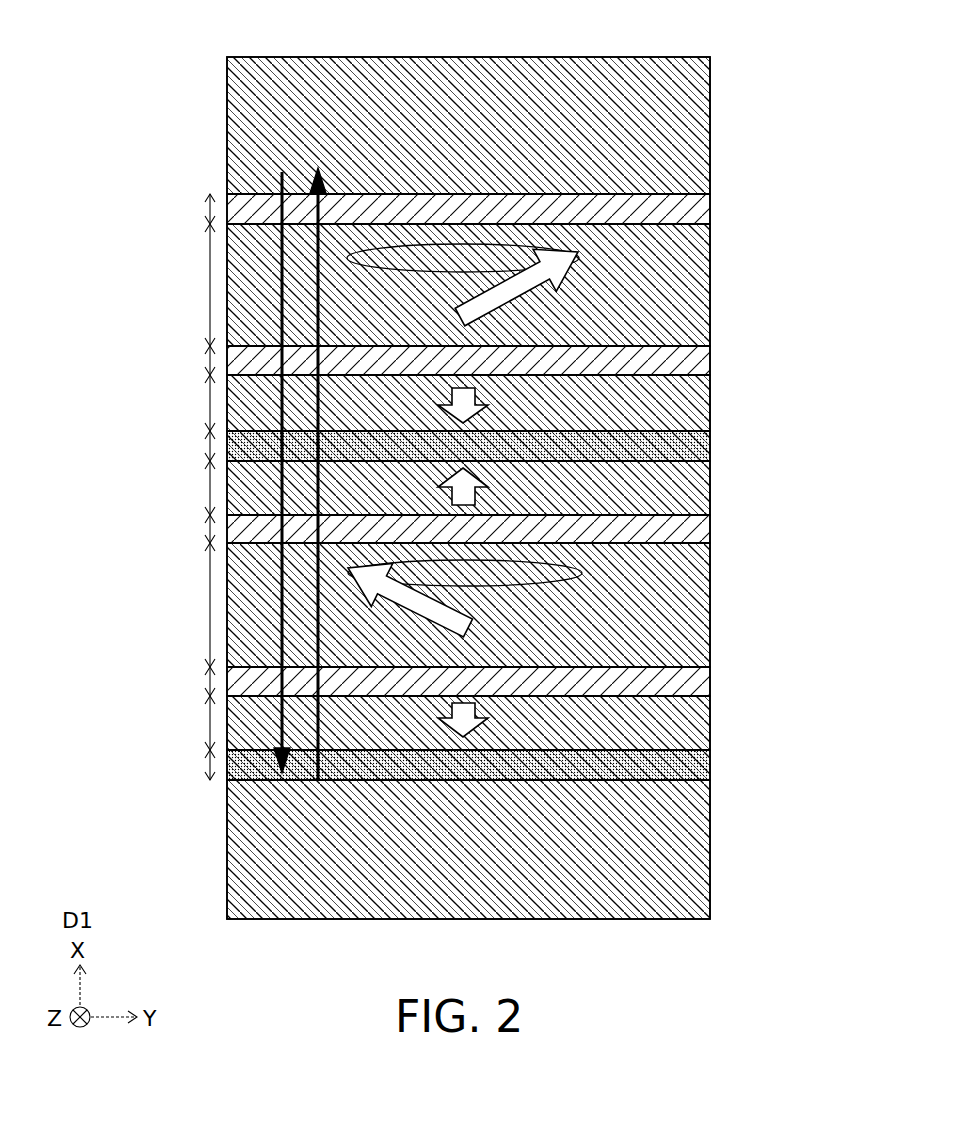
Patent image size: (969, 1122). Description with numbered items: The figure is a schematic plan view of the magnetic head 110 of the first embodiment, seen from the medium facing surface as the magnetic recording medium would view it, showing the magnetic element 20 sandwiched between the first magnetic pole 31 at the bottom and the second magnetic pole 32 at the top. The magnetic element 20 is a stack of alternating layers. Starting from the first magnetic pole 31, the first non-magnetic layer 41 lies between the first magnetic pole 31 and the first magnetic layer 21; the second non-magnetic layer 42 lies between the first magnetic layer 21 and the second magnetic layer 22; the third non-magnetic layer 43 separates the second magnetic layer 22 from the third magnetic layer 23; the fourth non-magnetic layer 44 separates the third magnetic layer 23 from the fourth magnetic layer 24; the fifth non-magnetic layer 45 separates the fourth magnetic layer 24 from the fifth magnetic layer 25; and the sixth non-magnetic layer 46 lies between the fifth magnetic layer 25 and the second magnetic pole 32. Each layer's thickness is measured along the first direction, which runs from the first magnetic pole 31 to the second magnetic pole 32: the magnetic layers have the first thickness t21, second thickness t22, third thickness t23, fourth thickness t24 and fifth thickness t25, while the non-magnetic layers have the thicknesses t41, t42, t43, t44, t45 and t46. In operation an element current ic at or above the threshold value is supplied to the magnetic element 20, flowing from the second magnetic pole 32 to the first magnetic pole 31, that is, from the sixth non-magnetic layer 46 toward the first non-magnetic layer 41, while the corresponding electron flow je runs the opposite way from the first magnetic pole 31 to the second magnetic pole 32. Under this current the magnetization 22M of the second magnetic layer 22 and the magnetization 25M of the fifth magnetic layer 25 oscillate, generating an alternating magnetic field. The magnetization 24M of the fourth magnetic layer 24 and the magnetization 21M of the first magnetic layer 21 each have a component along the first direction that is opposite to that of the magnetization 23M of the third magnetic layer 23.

The magnetic head 110 is at (823, 86).
The second magnetic pole 32 is at (690, 122).
The first magnetic pole 31 is at (690, 857).
The magnetic element 20 is at (811, 780).
The sixth non-magnetic layer 46 is at (690, 220).
The fifth non-magnetic layer 45 is at (690, 364).
The fourth non-magnetic layer 44 is at (690, 447).
The third non-magnetic layer 43 is at (690, 530).
The second non-magnetic layer 42 is at (690, 678).
The first non-magnetic layer 41 is at (690, 763).
The fifth magnetic layer 25 is at (690, 308).
The fourth magnetic layer 24 is at (690, 414).
The third magnetic layer 23 is at (690, 497).
The second magnetic layer 22 is at (690, 607).
The first magnetic layer 21 is at (690, 730).
The magnetization of the fifth magnetic layer 25M is at (567, 283).
The magnetization of the fourth magnetic layer 24M is at (478, 395).
The magnetization of the third magnetic layer 23M is at (478, 478).
The magnetization of the second magnetic layer 22M is at (472, 617).
The magnetization of the first magnetic layer 21M is at (478, 707).
The element current ic is at (281, 745).
The electron flow je is at (320, 745).
The sixth non-magnetic layer thickness t46 is at (178, 209).
The fifth thickness t25 is at (178, 285).
The fifth non-magnetic layer thickness t45 is at (178, 360).
The fourth thickness t24 is at (178, 403).
The fourth non-magnetic layer thickness t44 is at (178, 446).
The third thickness t23 is at (178, 488).
The third non-magnetic layer thickness t43 is at (178, 529).
The second thickness t22 is at (178, 605).
The second non-magnetic layer thickness t42 is at (178, 681).
The first thickness t21 is at (178, 723).
The first non-magnetic layer thickness t41 is at (178, 765).